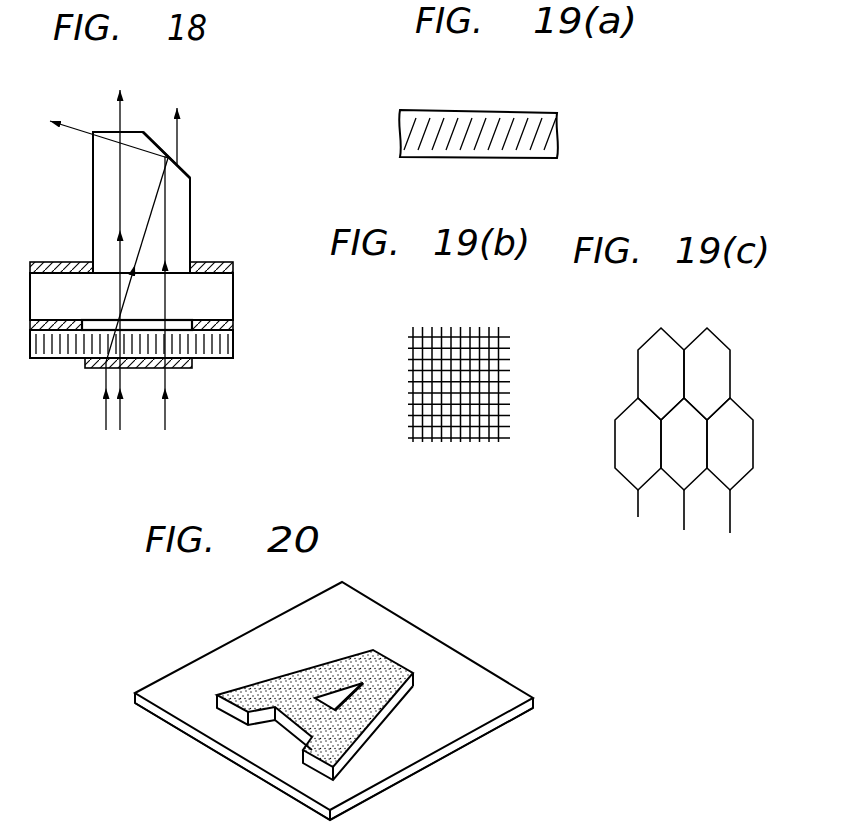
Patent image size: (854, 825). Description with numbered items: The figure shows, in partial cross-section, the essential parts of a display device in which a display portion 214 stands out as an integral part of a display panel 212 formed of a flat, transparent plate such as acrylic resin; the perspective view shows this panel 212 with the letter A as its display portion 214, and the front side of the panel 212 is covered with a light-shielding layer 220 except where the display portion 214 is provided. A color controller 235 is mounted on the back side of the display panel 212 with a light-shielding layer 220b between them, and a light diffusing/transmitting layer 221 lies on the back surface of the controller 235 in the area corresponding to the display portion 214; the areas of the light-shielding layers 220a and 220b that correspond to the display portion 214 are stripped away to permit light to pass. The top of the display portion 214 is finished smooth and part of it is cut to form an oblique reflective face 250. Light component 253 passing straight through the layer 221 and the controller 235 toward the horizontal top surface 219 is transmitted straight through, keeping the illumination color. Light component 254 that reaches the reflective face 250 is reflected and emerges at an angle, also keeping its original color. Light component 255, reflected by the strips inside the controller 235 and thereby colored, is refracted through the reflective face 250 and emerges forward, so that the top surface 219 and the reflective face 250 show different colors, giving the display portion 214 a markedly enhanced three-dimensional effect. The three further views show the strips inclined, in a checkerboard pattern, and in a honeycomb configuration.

In FIG. 18, the display panel 212 is at (234, 310).
In FIG. 20, the display panel 212 is at (479, 741).
In FIG. 18, the display portion 214 is at (197, 230).
In FIG. 20, the display portion 214 is at (382, 735).
In FIG. 18, the top surface 219 is at (104, 131).
In FIG. 20, the top surface 219 is at (403, 658).
In FIG. 20, the light-shielding layer 220 is at (515, 717).
In FIG. 18, the light-shielding layer 220a is at (233, 268).
In FIG. 18, the light-shielding layer 220b is at (233, 326).
In FIG. 18, the light diffusing/transmitting layer 221 is at (192, 368).
In FIG. 18, the color controller 235 is at (234, 353).
The color controller 235 is at (502, 108).
In FIG. 18, the oblique reflective face 250 is at (181, 168).
In FIG. 18, the light component 253 is at (122, 117).
In FIG. 18, the light component 254 is at (166, 207).
In FIG. 18, the light component 255 is at (157, 217).